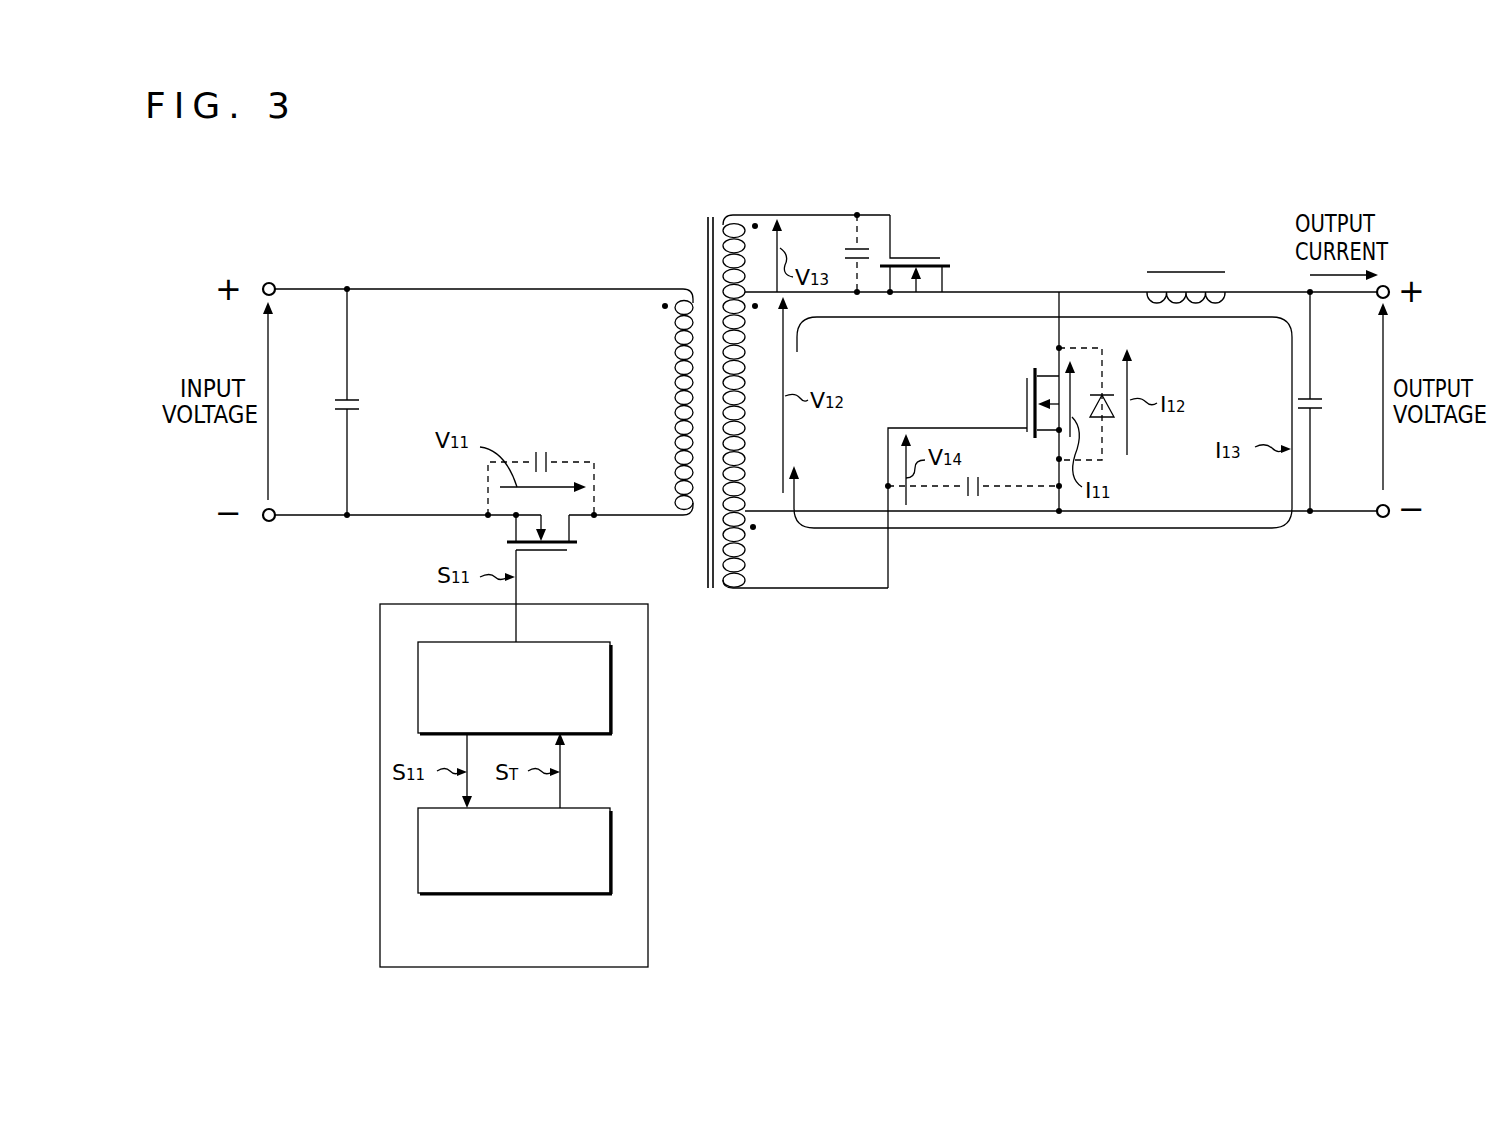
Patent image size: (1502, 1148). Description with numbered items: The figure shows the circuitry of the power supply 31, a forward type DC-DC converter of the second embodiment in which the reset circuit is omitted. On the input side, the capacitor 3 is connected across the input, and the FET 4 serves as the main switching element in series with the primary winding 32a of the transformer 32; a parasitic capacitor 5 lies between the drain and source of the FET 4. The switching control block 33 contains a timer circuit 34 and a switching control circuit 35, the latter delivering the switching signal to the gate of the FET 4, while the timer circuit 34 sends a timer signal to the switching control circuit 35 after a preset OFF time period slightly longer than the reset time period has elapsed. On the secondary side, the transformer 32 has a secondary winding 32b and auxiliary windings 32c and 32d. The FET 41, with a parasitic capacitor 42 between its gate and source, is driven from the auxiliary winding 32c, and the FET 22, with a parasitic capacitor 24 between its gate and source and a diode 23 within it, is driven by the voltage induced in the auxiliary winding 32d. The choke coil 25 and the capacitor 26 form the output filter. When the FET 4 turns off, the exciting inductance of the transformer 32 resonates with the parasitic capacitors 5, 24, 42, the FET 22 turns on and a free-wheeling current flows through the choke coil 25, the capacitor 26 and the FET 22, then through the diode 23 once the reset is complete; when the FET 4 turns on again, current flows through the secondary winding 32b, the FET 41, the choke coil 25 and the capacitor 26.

The capacitor 3 is at (350, 399).
The FET 4 is at (548, 552).
The parasitic capacitor 5 is at (550, 453).
The FET 22 is at (1050, 375).
The diode 23 is at (1106, 420).
The parasitic capacitor 24 is at (983, 484).
The choke coil 25 is at (1215, 272).
The capacitor 26 is at (1313, 397).
The power supply 31 is at (357, 208).
The transformer 32 is at (709, 214).
The primary winding 32a is at (673, 497).
The secondary winding 32b is at (747, 467).
The auxiliary winding 32c is at (747, 248).
The auxiliary winding 32d is at (747, 573).
The switching control block 33 is at (380, 830).
The timer circuit 34 is at (590, 808).
The switching control circuit 35 is at (580, 642).
The FET 41 is at (930, 258).
The parasitic capacitor 42 is at (853, 247).